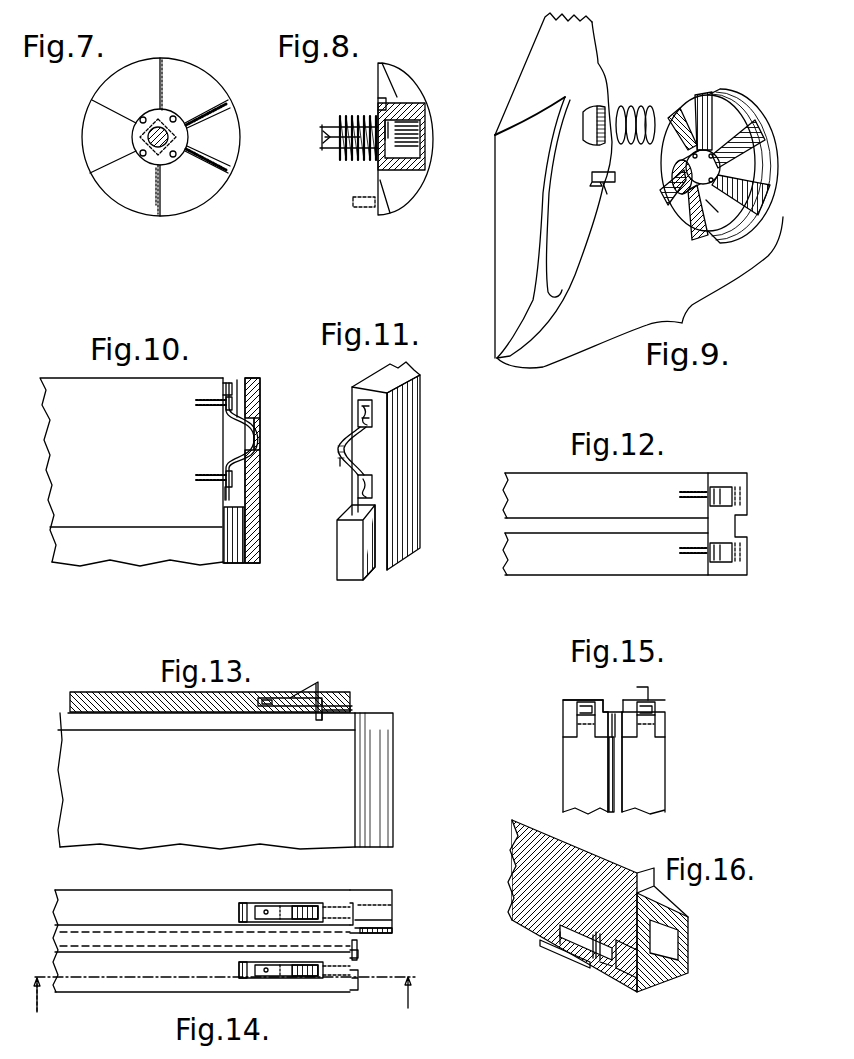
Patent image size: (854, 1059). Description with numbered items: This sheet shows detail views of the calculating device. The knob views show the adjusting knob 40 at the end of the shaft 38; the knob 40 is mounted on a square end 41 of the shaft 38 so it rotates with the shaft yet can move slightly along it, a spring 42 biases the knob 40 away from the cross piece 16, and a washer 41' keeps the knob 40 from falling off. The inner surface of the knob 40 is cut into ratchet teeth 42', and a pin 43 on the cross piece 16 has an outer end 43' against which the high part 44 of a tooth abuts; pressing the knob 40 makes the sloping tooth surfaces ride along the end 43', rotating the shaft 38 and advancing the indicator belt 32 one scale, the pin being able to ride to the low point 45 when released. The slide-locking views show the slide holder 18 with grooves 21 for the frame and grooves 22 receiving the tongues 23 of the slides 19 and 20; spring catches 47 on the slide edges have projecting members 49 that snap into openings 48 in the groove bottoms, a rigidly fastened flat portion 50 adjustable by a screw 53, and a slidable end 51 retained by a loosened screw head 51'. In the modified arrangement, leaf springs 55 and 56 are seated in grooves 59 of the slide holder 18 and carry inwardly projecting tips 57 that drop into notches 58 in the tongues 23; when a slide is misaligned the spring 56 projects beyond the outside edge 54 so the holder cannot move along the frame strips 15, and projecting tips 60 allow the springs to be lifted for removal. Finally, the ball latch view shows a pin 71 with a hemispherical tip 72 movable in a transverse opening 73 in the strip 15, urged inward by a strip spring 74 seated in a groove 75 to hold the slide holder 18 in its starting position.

In FIG. 7, the shaft 38 is at (169, 138).
In FIG. 8, the shaft 38 is at (330, 132).
In FIG. 8, the knob 40 is at (405, 183).
In FIG. 8, the square end 41 is at (414, 123).
In FIG. 8, the washer 41' is at (369, 102).
In FIG. 8, the spring 42 is at (355, 119).
In FIG. 9, the spring 42 is at (635, 106).
In FIG. 8, the ratchet teeth 42' is at (358, 190).
In FIG. 9, the ratchet teeth 42' is at (694, 198).
In FIG. 9, the pin 43 is at (614, 197).
In FIG. 9, the outer end of pin 43' is at (618, 169).
In FIG. 8, the high part of ratchet tooth 44 is at (384, 99).
In FIG. 9, the high part of ratchet tooth 44 is at (710, 240).
In FIG. 9, the low point of ratchet 45 is at (717, 95).
In FIG. 9, the cross pieces 16 is at (544, 38).
In FIG. 9, the endless belts 32 is at (593, 107).
In FIG. 14, the strips 15 is at (222, 1007).
In FIG. 16, the strips 15 is at (628, 985).
In FIG. 12, the slide holder 18 is at (570, 518).
In FIG. 14, the slide holder 18 is at (185, 893).
In FIG. 15, the slide holder 18 is at (613, 722).
In FIG. 16, the slide holder 18 is at (530, 862).
In FIG. 11, the slide 19 is at (417, 425).
In FIG. 14, the slide 19 is at (390, 918).
In FIG. 15, the slide 19 is at (643, 757).
In FIG. 14, the slide 20 is at (115, 940).
In FIG. 15, the slide 20 is at (585, 757).
In FIG. 12, the grooves 21 is at (733, 525).
In FIG. 15, the grooves 21 is at (604, 703).
In FIG. 16, the grooves 21 is at (652, 982).
In FIG. 10, the grooves 22 is at (248, 492).
In FIG. 11, the tongues 23 is at (352, 555).
In FIG. 13, the tongues 23 is at (350, 725).
In FIG. 15, the tongues 23 is at (578, 730).
In FIG. 10, the spring catches 47 is at (257, 433).
In FIG. 11, the spring catches 47 is at (340, 445).
In FIG. 12, the spring catches 47 is at (722, 506).
In FIG. 10, the openings 48 is at (258, 446).
In FIG. 12, the openings 48 is at (745, 505).
In FIG. 10, the projecting members 49 is at (238, 380).
In FIG. 11, the projecting members 49 is at (344, 460).
In FIG. 10, the flat portion 50 is at (227, 383).
In FIG. 11, the flat portion 50 is at (358, 405).
In FIG. 10, the flat portion 51 is at (214, 489).
In FIG. 11, the flat portion 51 is at (342, 492).
In FIG. 10, the screw head 51' is at (211, 465).
In FIG. 11, the screw head 51' is at (335, 512).
In FIG. 10, the adjusting screw 53 is at (222, 408).
In FIG. 11, the adjusting screw 53 is at (365, 407).
In FIG. 12, the adjusting screw 53 is at (720, 487).
In FIG. 13, the outside edges 54 is at (340, 692).
In FIG. 15, the outside edges 54 is at (572, 700).
In FIG. 13, the leaf spring 55 is at (310, 684).
In FIG. 14, the leaf spring 55 is at (278, 906).
In FIG. 15, the leaf spring 55 is at (650, 690).
In FIG. 13, the leaf spring 56 is at (280, 700).
In FIG. 14, the leaf spring 56 is at (302, 976).
In FIG. 15, the leaf spring 56 is at (577, 708).
In FIG. 13, the tips 57 is at (316, 720).
In FIG. 13, the notches 58 is at (323, 722).
In FIG. 13, the grooves 59 is at (260, 698).
In FIG. 14, the grooves 59 is at (244, 903).
In FIG. 13, the projecting tips 60 is at (348, 706).
In FIG. 14, the projecting tips 60 is at (352, 930).
In FIG. 16, the pin 71 is at (594, 960).
In FIG. 16, the hemispherical tip 72 is at (598, 935).
In FIG. 16, the transverse opening 73 is at (605, 966).
In FIG. 16, the strip spring 74 is at (568, 960).
In FIG. 16, the groove 75 is at (560, 945).